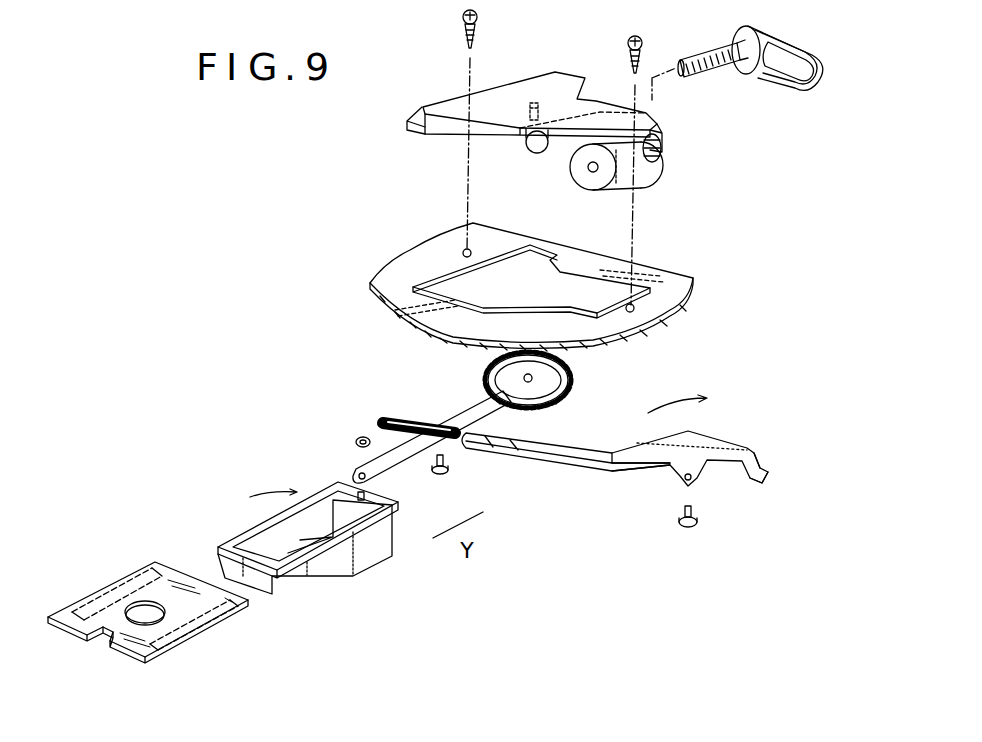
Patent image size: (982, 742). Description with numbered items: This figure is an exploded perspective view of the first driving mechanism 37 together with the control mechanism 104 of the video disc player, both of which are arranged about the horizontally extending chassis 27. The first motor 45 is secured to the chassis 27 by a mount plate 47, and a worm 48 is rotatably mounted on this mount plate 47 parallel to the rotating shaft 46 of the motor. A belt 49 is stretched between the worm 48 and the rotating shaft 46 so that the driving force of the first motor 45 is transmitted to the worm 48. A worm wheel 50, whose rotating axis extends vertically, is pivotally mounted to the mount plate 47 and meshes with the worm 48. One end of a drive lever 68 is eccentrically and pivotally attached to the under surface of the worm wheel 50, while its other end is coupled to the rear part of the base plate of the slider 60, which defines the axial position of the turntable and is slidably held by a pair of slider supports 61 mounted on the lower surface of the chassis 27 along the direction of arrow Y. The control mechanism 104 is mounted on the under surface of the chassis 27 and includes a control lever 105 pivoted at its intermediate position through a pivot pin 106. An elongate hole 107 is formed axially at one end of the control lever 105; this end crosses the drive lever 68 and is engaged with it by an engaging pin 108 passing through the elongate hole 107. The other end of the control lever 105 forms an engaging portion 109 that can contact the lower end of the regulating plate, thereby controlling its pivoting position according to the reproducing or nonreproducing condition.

The chassis 27 is at (668, 305).
The first driving mechanism 37 is at (260, 507).
The first motor 45 is at (648, 178).
The rotating shaft 46 is at (663, 145).
The mount plate 47 is at (562, 92).
The worm 48 is at (712, 72).
The belt 49 is at (785, 92).
The worm wheel 50 is at (568, 374).
The slider 60 is at (325, 575).
The slider support 61 is at (150, 656).
The drive lever 68 is at (405, 465).
The control mechanism 104 is at (605, 478).
The control lever 105 is at (557, 458).
The pivot pin 106 is at (700, 522).
The elongate hole 107 is at (404, 418).
The engaging pin 108 is at (450, 470).
The engaging portion 109 is at (766, 471).